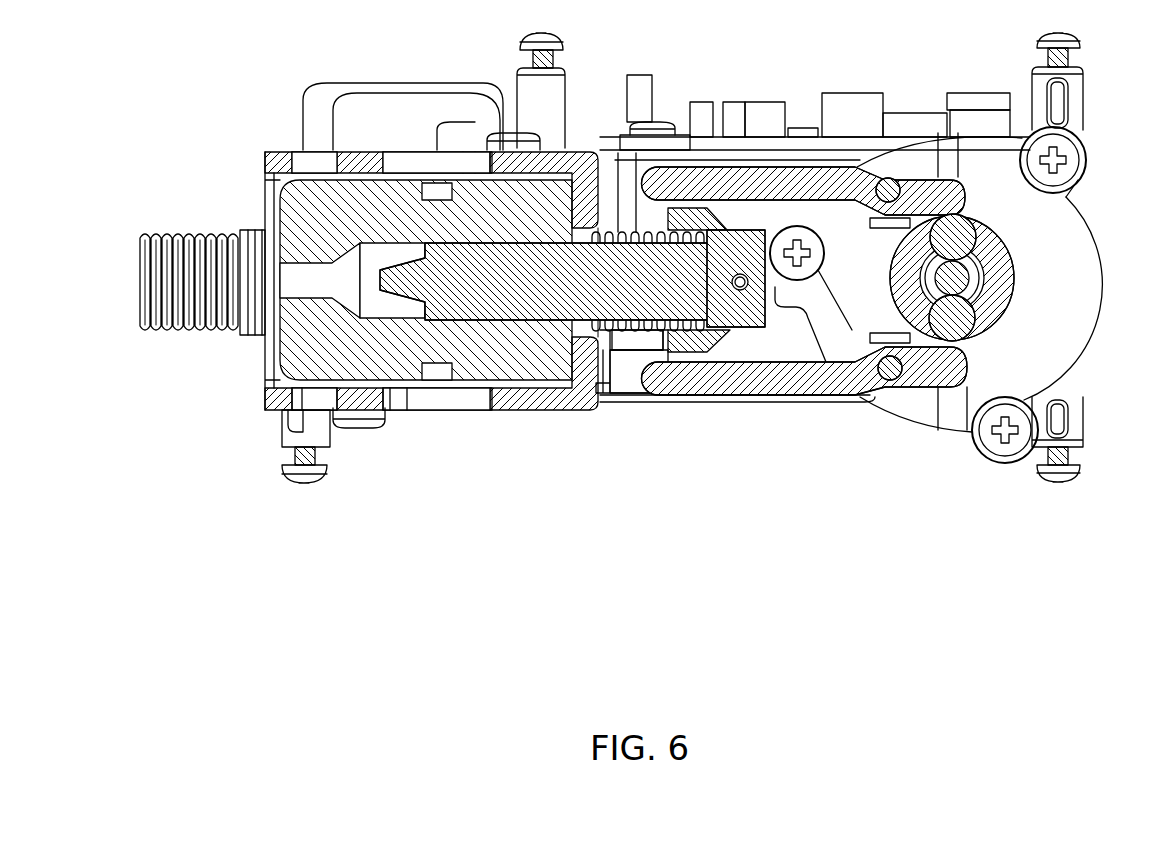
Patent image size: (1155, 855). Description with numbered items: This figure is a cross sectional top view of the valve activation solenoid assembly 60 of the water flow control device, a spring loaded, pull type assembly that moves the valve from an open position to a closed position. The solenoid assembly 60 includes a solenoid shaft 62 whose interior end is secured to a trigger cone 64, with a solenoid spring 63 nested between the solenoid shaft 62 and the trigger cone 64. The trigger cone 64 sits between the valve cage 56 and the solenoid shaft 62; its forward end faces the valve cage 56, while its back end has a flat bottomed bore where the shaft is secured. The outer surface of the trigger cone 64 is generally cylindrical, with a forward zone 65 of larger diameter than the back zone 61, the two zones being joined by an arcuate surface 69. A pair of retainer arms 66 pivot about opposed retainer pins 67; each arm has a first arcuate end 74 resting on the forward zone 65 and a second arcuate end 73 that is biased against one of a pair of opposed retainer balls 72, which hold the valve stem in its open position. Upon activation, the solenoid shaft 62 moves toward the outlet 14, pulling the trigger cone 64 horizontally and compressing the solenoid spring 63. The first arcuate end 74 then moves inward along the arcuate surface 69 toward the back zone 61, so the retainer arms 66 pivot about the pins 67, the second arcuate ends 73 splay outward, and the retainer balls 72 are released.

The outlet 14 is at (228, 232).
The valve cage 56 is at (1065, 325).
The solenoid assembly 60 is at (640, 343).
The back zone 61 is at (750, 337).
The solenoid shaft 62 is at (497, 245).
The solenoid spring 63 is at (640, 232).
The trigger cone 64 is at (755, 232).
The forward zone 65 is at (690, 207).
The retainer arms 66 is at (778, 390).
The retainer pins 67 is at (878, 208).
The arcuate surface 69 is at (717, 345).
The retainer balls 72 is at (962, 232).
The second arcuate end 73 is at (943, 228).
The first arcuate end 74 is at (662, 352).